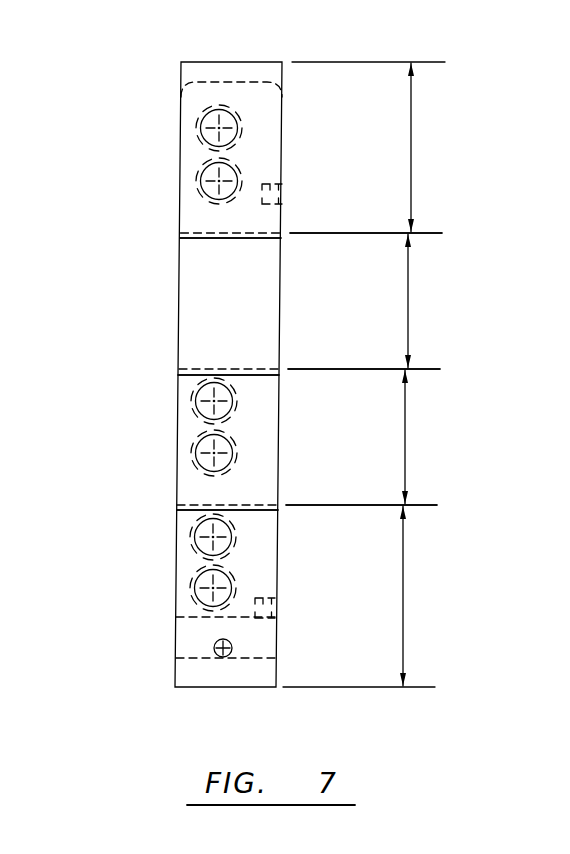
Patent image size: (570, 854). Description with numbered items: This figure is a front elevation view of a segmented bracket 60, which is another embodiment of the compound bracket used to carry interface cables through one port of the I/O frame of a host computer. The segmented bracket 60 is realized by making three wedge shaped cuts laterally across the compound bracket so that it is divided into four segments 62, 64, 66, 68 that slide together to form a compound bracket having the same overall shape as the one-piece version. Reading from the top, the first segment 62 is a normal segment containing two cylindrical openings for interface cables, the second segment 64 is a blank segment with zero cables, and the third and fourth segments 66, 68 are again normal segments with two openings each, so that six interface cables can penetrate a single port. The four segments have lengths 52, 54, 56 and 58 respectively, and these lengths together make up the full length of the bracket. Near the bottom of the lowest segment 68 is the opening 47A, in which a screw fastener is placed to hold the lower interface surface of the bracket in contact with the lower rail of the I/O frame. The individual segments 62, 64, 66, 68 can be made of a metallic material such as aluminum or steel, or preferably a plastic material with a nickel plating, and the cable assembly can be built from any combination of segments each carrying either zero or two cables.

The segmented bracket 60 is at (475, 180).
The first normal segment 62 is at (180, 143).
The blank segment 64 is at (177, 335).
The second normal segment 66 is at (176, 462).
The third normal segment 68 is at (175, 592).
The opening 47A is at (214, 646).
The length of first segment 52 is at (367, 147).
The length of blank segment 54 is at (365, 301).
The length of second normal segment 56 is at (363, 437).
The length of third normal segment 58 is at (360, 596).